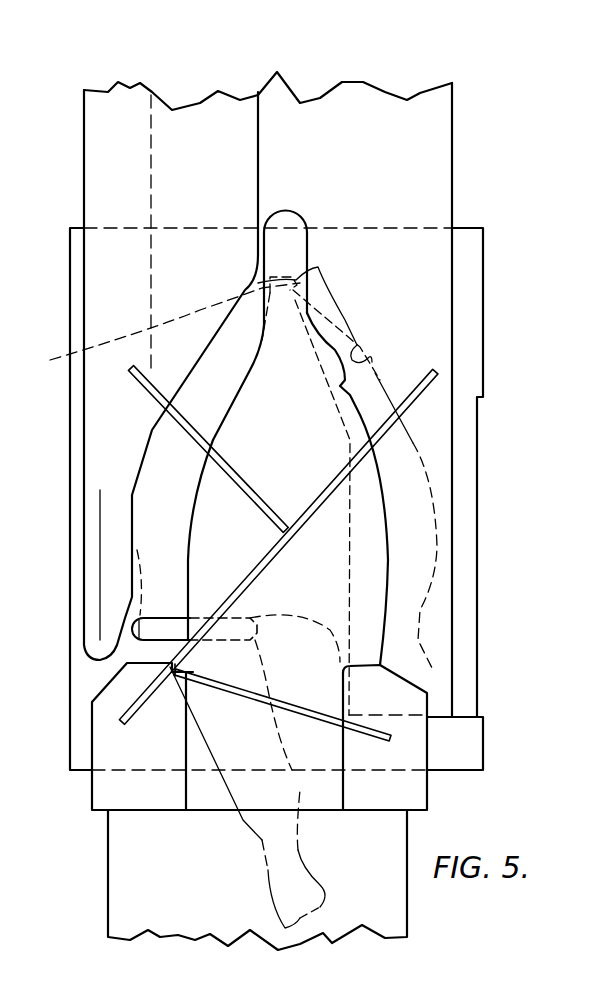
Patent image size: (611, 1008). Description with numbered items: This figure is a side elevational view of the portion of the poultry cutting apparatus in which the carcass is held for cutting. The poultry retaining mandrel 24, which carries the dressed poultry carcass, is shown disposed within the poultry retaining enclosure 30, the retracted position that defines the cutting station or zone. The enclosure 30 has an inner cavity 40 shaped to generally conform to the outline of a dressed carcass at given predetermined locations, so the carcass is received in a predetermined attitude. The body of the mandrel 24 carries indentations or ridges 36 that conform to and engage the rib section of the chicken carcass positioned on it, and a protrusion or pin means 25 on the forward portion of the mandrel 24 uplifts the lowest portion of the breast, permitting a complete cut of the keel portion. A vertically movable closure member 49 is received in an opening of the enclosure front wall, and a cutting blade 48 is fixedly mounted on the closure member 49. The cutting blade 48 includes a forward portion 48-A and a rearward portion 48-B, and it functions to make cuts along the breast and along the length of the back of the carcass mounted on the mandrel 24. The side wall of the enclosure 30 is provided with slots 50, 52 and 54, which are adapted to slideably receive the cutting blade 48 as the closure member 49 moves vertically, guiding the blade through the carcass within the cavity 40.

The poultry retaining mandrel 24 is at (380, 508).
The pin means 25 is at (137, 630).
The poultry retaining enclosure 30 is at (555, 226).
The indentations or ridges 36 is at (372, 372).
The inner cavity 40 is at (372, 360).
The cutting blade 48 is at (420, 183).
The forward portion 48-A is at (50, 360).
The rearward portion 48-B is at (430, 605).
The closure member 49 is at (98, 486).
The slot 50 is at (342, 508).
The slot 52 is at (248, 500).
The slot 54 is at (248, 693).